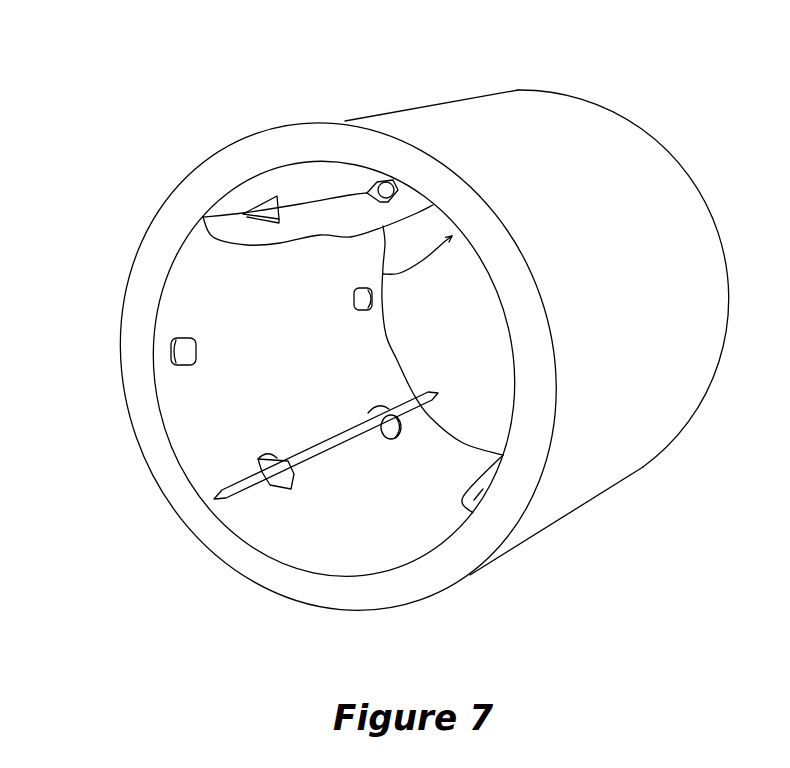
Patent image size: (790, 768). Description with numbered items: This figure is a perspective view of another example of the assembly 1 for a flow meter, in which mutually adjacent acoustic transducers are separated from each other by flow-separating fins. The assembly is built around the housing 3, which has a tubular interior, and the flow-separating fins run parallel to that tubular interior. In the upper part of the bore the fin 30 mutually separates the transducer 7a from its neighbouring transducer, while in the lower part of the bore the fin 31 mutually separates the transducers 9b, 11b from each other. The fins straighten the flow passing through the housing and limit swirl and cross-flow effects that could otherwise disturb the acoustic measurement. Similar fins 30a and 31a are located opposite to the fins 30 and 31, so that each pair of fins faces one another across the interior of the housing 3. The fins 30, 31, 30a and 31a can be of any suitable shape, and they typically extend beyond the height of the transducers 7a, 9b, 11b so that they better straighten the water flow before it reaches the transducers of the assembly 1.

The assembly 1 is at (118, 78).
The housing 3 is at (589, 118).
The fin 30 is at (230, 230).
The transducer 7a is at (272, 203).
The fin 30a is at (383, 274).
The transducer 9b is at (263, 455).
The transducer 11b is at (283, 485).
The fin 31 is at (215, 497).
The fin 31a is at (478, 495).